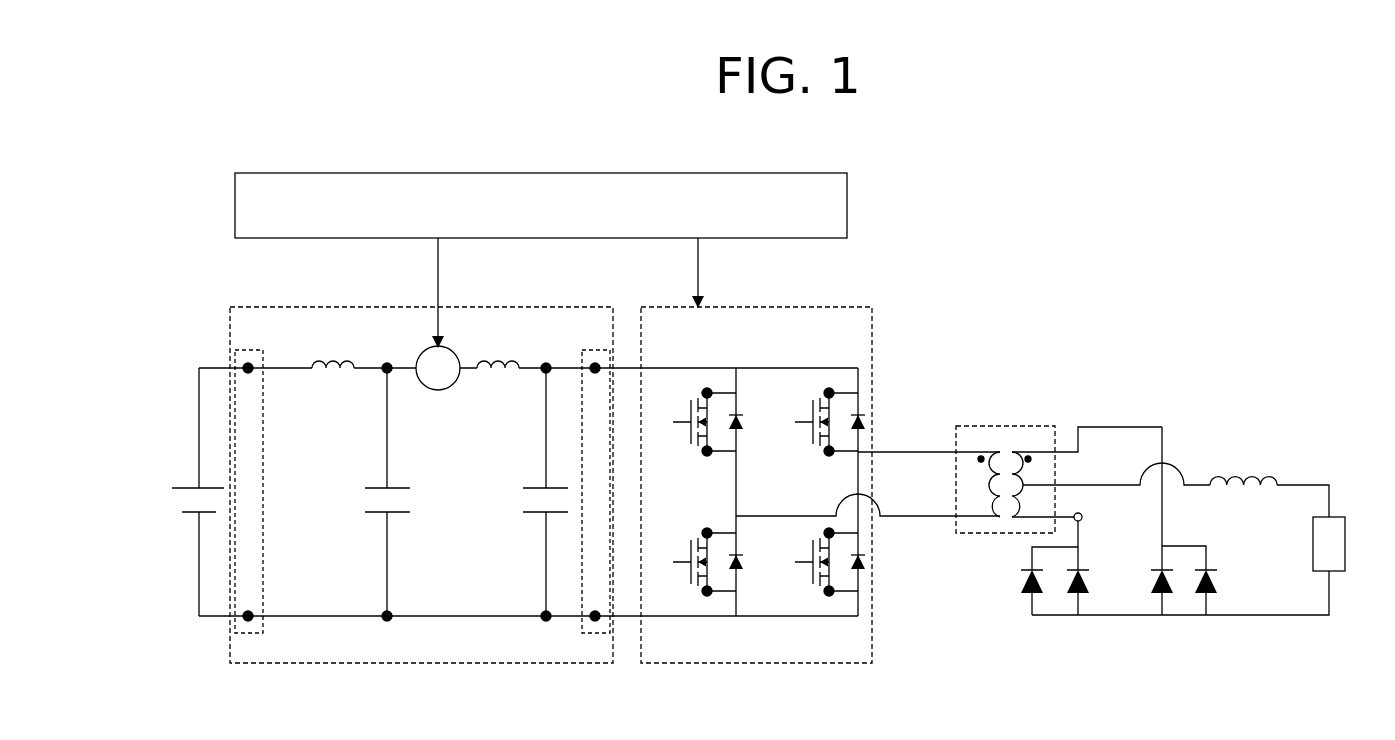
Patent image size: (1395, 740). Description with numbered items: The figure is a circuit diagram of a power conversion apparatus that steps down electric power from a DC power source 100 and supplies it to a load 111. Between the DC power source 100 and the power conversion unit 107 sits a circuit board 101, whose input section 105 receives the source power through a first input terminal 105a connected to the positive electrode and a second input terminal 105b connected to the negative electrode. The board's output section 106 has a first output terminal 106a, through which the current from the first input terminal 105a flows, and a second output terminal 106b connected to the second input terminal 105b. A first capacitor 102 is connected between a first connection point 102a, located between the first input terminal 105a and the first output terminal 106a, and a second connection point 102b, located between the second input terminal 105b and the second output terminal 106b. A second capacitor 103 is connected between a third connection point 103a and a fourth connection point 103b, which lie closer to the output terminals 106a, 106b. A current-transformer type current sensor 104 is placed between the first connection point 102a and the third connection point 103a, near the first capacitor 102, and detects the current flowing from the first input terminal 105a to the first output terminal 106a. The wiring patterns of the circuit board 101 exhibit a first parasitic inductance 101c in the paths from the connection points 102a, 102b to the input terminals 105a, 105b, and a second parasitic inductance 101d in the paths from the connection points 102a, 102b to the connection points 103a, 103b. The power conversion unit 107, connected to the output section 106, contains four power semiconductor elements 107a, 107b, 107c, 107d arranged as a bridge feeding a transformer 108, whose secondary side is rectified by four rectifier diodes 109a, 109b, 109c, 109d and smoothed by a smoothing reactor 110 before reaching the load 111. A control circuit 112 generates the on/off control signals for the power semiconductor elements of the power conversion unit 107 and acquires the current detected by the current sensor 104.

The DC power source 100 is at (195, 515).
The circuit board 101 is at (367, 305).
The first parasitic inductance 101c is at (352, 361).
The second parasitic inductance 101d is at (492, 361).
The first capacitor 102 is at (365, 509).
The first connection point 102a is at (384, 375).
The second connection point 102b is at (384, 608).
The second capacitor 103 is at (523, 509).
The third connection point 103a is at (542, 374).
The fourth connection point 103b is at (542, 608).
The current sensor 104 is at (438, 391).
The input section 105 is at (264, 467).
The first input terminal 105a is at (251, 362).
The second input terminal 105b is at (248, 622).
The output section 106 is at (582, 467).
The first output terminal 106a is at (594, 362).
The second output terminal 106b is at (595, 622).
The power conversion unit 107 is at (765, 306).
The power semiconductor element 107a is at (698, 452).
The power semiconductor element 107b is at (820, 452).
The power semiconductor element 107c is at (690, 572).
The power semiconductor element 107d is at (808, 572).
The transformer 108 is at (1000, 424).
The rectifier diode 109a is at (1032, 604).
The rectifier diode 109b is at (1084, 604).
The rectifier diode 109c is at (1156, 604).
The rectifier diode 109d is at (1208, 604).
The smoothing reactor 110 is at (1238, 465).
The load 111 is at (1338, 514).
The control circuit 112 is at (571, 172).